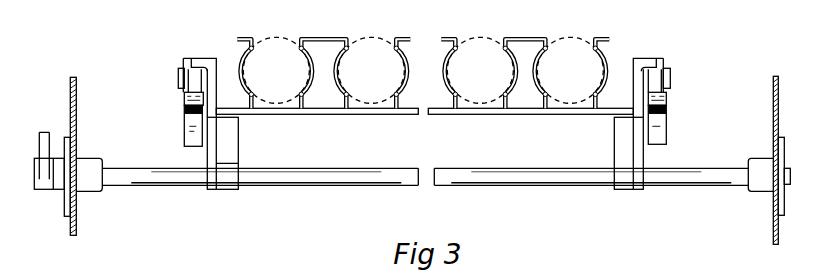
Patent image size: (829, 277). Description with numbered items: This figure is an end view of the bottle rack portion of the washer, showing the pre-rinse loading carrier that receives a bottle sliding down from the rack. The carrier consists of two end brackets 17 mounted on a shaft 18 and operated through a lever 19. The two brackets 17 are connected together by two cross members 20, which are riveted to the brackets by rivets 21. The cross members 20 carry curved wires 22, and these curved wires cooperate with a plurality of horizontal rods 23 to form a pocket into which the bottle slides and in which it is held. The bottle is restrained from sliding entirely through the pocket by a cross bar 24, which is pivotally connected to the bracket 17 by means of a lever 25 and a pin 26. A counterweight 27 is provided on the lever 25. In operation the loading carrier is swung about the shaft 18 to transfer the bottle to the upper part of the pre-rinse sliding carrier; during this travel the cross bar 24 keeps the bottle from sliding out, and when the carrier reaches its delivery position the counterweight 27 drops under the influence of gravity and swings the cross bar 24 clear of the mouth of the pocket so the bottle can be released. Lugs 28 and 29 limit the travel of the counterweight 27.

The end bracket 17 is at (237, 144).
The shaft 18 is at (340, 184).
The lever 19 is at (38, 131).
The cross member 20 is at (326, 113).
The rivet 21 is at (227, 104).
The curved wire 22 is at (333, 36).
The horizontal rod 23 is at (252, 92).
The cross bar 24 is at (480, 56).
The lever 25 is at (183, 92).
The pin 26 is at (180, 68).
The counterweight 27 is at (187, 135).
The lug 28 is at (193, 57).
The lug 29 is at (200, 110).